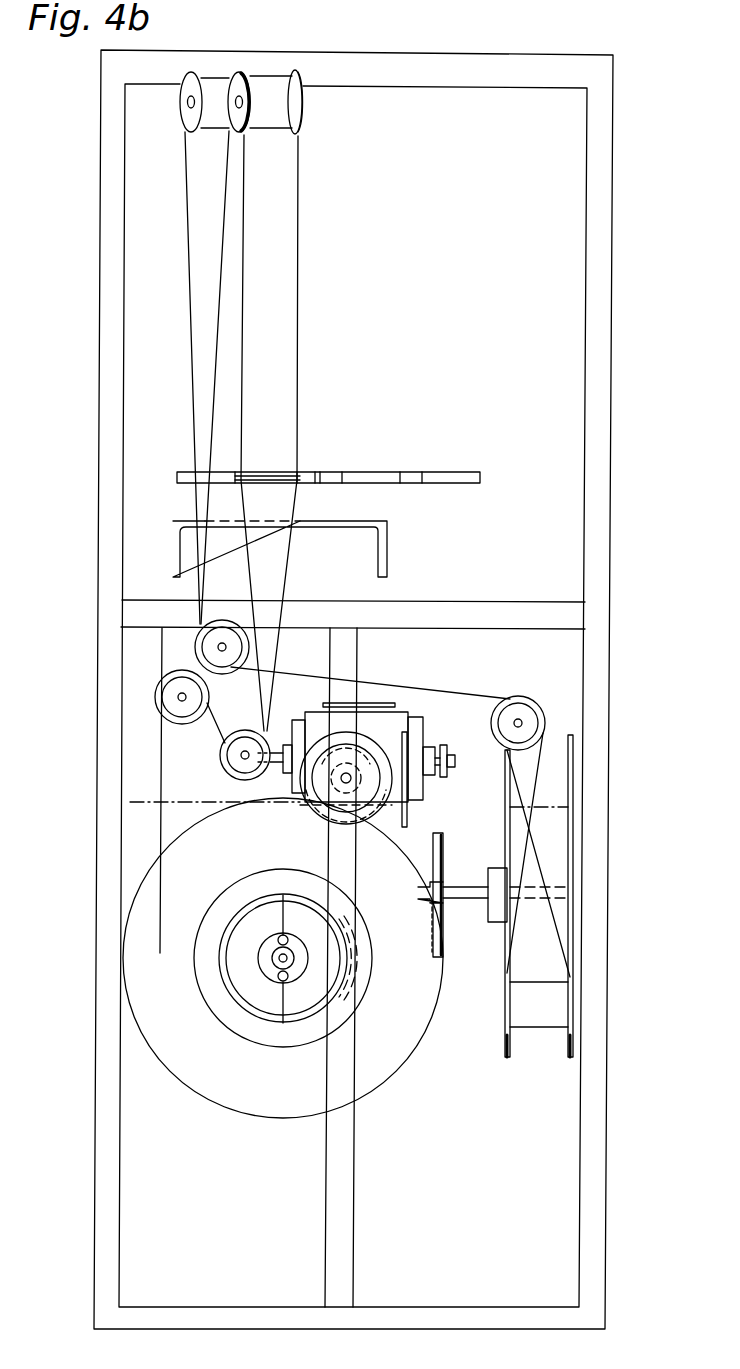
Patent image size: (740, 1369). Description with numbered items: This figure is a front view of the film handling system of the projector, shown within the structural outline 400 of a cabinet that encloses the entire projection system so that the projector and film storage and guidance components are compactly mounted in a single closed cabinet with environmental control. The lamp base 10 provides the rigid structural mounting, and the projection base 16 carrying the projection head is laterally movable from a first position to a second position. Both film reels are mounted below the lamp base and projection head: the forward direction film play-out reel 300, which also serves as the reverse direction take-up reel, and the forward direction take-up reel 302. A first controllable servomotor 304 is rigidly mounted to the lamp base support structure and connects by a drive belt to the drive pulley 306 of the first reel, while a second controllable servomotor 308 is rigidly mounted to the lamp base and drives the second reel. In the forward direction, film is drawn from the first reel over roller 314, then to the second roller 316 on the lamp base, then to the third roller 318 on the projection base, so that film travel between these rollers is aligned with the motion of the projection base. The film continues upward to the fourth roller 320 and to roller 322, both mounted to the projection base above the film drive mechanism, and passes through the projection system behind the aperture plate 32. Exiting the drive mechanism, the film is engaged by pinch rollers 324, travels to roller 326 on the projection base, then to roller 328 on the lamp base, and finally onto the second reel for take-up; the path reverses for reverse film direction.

The structural outline 400 is at (609, 372).
The fourth roller 320 is at (179, 115).
The roller 322 is at (306, 100).
The aperture plate 32 is at (298, 277).
The projection base 16 is at (452, 472).
The pinch rollers 324 is at (300, 473).
The lamp base 10 is at (387, 556).
The third roller 318 is at (203, 630).
The roller 328 is at (157, 700).
The roller 326 is at (222, 773).
The first controllable servomotor 304 is at (405, 712).
The second controllable servomotor 308 is at (318, 812).
The second roller 316 is at (547, 722).
The drive pulley 306 is at (443, 836).
The forward direction film play-out reel 300 is at (554, 895).
The roller 314 is at (577, 1046).
The forward direction take-up reel 302 is at (227, 1113).